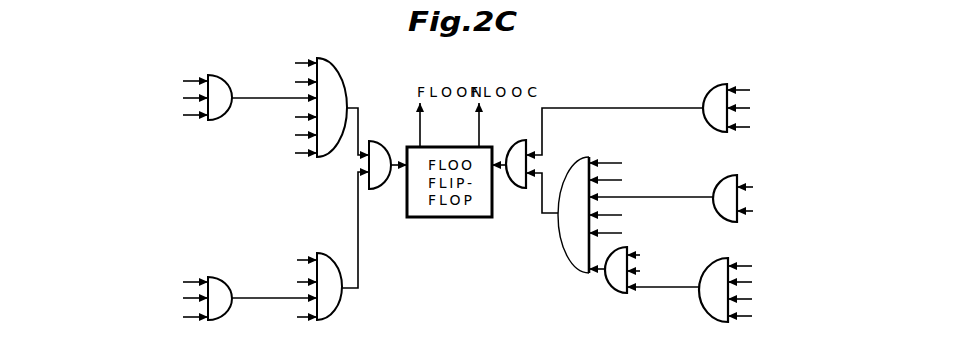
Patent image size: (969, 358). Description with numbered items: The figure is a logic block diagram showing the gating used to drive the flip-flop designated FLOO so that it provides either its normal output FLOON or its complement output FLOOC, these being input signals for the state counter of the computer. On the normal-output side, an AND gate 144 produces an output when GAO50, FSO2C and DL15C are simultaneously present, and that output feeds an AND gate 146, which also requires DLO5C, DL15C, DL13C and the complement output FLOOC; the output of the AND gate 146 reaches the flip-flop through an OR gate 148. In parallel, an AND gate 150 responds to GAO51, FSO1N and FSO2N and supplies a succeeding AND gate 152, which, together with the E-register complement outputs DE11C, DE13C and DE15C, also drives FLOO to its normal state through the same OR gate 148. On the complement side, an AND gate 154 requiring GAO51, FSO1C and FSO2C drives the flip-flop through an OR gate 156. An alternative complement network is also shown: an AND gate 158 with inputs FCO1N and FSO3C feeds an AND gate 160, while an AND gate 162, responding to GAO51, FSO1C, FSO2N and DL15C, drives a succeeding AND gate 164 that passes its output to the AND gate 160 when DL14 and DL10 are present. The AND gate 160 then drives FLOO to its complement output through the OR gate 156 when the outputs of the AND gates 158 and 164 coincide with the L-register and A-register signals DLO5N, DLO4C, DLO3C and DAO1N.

The AND gate 144 is at (215, 73).
The AND gate 146 is at (336, 73).
The OR gate 148 is at (383, 191).
The AND gate 150 is at (214, 277).
The AND gate 152 is at (332, 258).
The AND gate 154 is at (716, 92).
The OR gate 156 is at (522, 190).
The AND gate 158 is at (731, 178).
The AND gate 160 is at (586, 162).
The AND gate 162 is at (712, 309).
The AND gate 164 is at (620, 294).